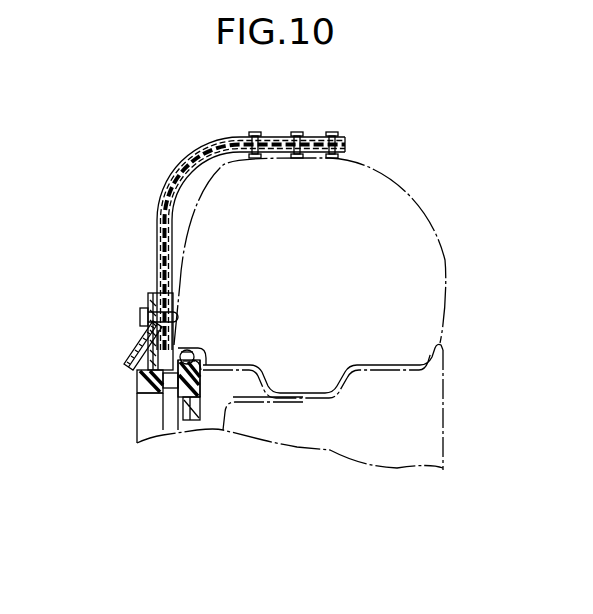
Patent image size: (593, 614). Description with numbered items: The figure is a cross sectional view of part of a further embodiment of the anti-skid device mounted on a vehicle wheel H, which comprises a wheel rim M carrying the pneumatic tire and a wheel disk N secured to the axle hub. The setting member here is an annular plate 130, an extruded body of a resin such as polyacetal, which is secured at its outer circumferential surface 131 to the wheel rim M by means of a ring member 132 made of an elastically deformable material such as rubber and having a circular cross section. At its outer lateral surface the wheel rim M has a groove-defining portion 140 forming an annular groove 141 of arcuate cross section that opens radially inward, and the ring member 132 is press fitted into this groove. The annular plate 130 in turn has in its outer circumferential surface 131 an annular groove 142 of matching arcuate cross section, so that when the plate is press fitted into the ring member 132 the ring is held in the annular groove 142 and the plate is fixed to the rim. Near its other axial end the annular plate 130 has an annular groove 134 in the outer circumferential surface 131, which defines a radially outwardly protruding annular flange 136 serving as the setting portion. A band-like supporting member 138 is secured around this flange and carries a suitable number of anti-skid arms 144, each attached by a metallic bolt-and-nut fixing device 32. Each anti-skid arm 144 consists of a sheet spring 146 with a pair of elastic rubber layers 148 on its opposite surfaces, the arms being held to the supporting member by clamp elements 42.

The anti-skid arm 144 is at (201, 229).
The sheet spring 146 is at (200, 148).
The elastic rubber layers 148 is at (172, 178).
The clamps 42 is at (333, 132).
The annular groove 134 is at (168, 350).
The fixing device 32 is at (128, 336).
The supporting member 138 is at (130, 371).
The annular flange 136 is at (137, 385).
The annular plate 130 is at (163, 375).
The outer circumferential surface 131 is at (193, 420).
The ring member 132 is at (196, 358).
The groove-defining portion 140 is at (196, 349).
The annular groove 141 is at (202, 354).
The annular groove 142 is at (200, 380).
The wheel rim M is at (263, 373).
The wheel disk N is at (282, 402).
The vehicle wheel H is at (465, 402).